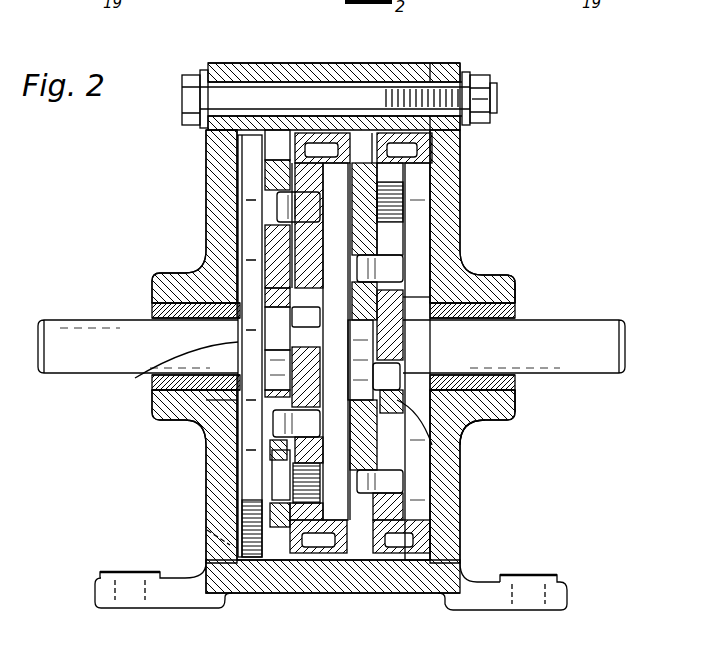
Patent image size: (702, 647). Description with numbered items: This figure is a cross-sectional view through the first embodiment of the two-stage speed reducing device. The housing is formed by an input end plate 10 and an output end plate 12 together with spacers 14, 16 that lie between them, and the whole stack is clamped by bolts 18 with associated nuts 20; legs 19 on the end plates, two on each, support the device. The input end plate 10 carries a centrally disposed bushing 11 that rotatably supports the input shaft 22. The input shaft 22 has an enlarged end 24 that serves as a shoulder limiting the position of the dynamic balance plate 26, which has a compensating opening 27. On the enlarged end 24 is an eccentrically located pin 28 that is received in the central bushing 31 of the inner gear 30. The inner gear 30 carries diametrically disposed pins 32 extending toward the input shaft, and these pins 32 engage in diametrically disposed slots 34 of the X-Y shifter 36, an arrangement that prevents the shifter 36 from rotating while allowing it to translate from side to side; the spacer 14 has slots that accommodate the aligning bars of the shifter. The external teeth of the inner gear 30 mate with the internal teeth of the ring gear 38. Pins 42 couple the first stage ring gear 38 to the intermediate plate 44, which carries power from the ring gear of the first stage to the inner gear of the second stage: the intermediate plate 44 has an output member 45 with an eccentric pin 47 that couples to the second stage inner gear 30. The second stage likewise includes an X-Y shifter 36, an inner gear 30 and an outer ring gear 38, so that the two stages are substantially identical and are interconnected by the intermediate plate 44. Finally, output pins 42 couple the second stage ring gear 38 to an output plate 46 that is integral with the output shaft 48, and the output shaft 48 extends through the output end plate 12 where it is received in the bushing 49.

The input end plate 10 is at (210, 208).
The bushing 11 is at (173, 295).
The output end plate 12 is at (462, 196).
The spacer 14 is at (320, 65).
The spacer 16 is at (398, 65).
The bolt 18 is at (500, 73).
The leg 19 is at (103, 573).
The nut 20 is at (482, 98).
The input shaft 22 is at (69, 330).
The enlarged end 24 is at (217, 402).
The dynamic balance plate 26 is at (247, 475).
The compensating opening 27 is at (203, 542).
The eccentrically located pin 28 is at (297, 279).
The inner gear 30 is at (307, 247).
The central bushing 31 is at (140, 377).
The pin 32 is at (277, 202).
The slot 34 is at (283, 232).
The X-Y shifter 36 is at (281, 165).
The ring gear 38 is at (300, 165).
The pin 42 is at (317, 143).
The intermediate plate 44 is at (337, 250).
The output member 45 is at (403, 297).
The output plate 46 is at (418, 228).
The eccentric pin 47 is at (463, 430).
The output shaft 48 is at (615, 320).
The bushing 49 is at (515, 410).